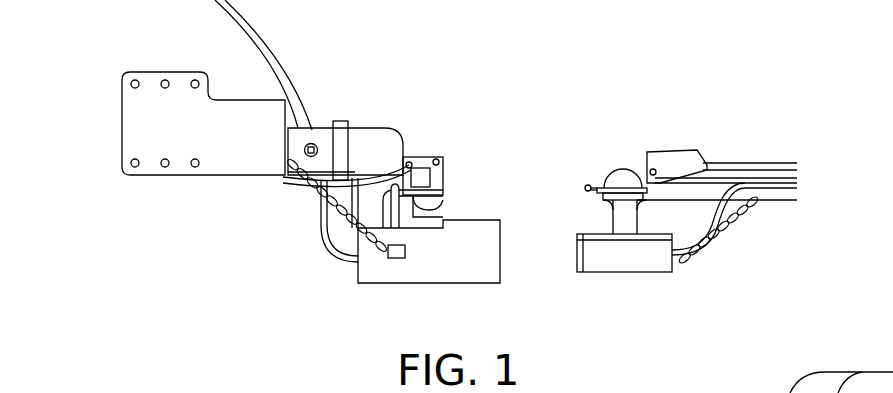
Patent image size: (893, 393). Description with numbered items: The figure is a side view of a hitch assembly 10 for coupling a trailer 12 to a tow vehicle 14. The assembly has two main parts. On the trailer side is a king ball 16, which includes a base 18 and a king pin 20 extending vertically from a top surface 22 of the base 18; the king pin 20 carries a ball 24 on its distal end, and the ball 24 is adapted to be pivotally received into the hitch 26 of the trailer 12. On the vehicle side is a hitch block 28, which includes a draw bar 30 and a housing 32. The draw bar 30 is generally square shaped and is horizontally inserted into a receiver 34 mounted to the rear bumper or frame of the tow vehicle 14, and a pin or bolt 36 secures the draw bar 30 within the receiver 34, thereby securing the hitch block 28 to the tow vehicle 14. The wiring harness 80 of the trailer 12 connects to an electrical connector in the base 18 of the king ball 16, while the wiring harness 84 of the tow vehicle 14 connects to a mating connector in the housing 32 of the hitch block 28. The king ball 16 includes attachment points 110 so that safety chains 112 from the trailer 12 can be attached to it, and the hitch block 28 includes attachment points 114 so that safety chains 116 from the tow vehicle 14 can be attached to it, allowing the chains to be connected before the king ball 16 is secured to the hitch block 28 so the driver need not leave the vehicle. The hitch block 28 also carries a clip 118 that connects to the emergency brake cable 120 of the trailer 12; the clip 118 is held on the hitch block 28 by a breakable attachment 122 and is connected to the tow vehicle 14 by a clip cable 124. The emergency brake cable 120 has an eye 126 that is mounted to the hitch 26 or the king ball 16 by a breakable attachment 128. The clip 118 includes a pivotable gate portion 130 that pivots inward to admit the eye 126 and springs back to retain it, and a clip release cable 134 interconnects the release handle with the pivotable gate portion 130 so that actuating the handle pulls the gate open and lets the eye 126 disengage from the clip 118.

The hitch assembly 10 is at (222, 276).
The trailer 12 is at (799, 214).
The tow vehicle 14 is at (110, 125).
The king ball 16 is at (615, 263).
The base 18 is at (612, 265).
The king pin 20 is at (620, 225).
The top surface 22 is at (585, 228).
The ball 24 is at (618, 206).
The hitch 26 is at (710, 168).
The hitch block 28 is at (352, 292).
The draw bar 30 is at (357, 138).
The housing 32 is at (482, 262).
The receiver 34 is at (300, 128).
The pin or bolt 36 is at (303, 153).
The wiring harness 80 is at (795, 190).
The wiring harness 84 is at (331, 257).
The attachment points 110 is at (672, 272).
The safety chains 112 is at (722, 240).
The attachment points 114 is at (395, 258).
The safety chains 116 is at (317, 212).
The clip 118 is at (418, 158).
The emergency brake cable 120 is at (745, 165).
The breakable attachment 122 is at (408, 160).
The clip cable 124 is at (283, 186).
The eye 126 is at (589, 185).
The breakable attachment 128 is at (599, 185).
The pivotable gate portion 130 is at (442, 176).
The clip release cable 134 is at (432, 200).